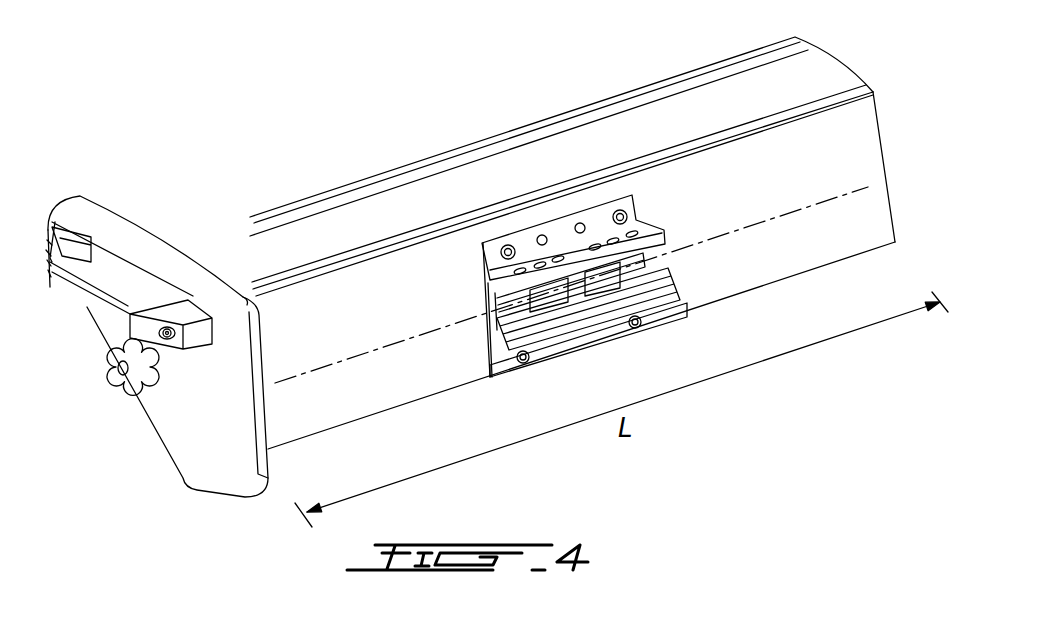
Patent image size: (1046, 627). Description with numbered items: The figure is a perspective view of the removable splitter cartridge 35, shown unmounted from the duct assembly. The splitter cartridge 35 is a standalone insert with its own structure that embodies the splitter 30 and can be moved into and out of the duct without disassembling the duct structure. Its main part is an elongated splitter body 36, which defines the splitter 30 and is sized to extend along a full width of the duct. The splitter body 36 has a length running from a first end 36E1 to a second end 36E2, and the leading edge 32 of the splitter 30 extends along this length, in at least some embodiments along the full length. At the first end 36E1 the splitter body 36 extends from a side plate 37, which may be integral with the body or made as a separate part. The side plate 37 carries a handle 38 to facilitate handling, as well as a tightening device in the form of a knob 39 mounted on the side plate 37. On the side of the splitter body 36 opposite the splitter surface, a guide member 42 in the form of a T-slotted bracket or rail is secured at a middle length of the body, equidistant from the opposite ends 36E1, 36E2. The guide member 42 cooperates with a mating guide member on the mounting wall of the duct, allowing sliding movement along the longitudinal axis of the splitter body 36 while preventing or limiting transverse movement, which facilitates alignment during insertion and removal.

The splitter 30 is at (563, 243).
The leading edge 32 is at (247, 217).
The splitter cartridge 35 is at (155, 252).
The splitter body 36 is at (563, 257).
The first end 36E1 is at (277, 454).
The second end 36E2 is at (902, 230).
The side plate 37 is at (52, 203).
The handle 38 is at (67, 285).
The knob 39 is at (124, 371).
The guide member 42 is at (510, 368).